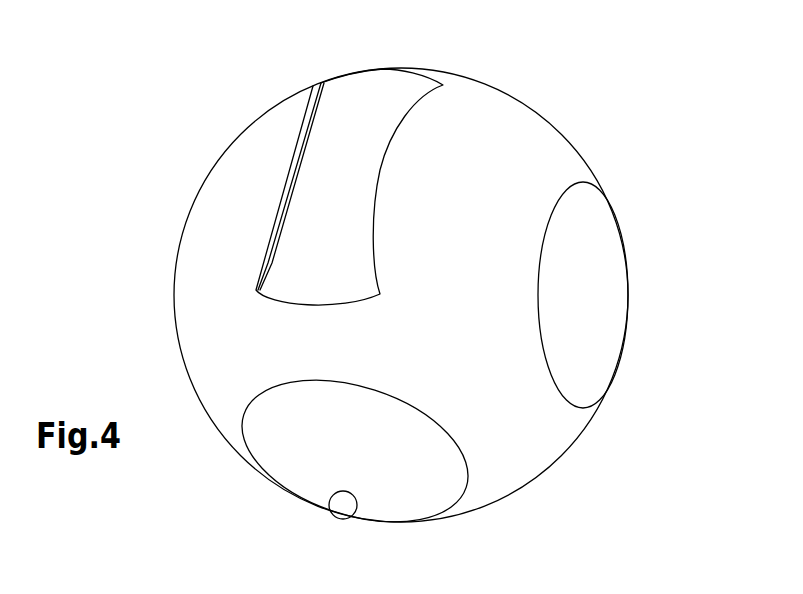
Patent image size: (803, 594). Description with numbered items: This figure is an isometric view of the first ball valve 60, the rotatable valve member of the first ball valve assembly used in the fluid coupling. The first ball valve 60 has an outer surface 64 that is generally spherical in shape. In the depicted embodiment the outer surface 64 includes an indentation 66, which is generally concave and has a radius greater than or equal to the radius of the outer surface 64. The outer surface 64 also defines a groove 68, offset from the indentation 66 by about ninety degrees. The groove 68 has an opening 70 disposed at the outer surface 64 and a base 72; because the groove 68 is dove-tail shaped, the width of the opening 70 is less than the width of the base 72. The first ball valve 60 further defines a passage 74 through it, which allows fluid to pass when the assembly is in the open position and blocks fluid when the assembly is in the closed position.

The first ball valve 60 is at (437, 295).
The outer surface 64 is at (452, 245).
The indentation 66 is at (595, 267).
The groove 68 is at (294, 164).
The opening 70 is at (285, 163).
The base 72 is at (315, 204).
The passage 74 is at (331, 516).